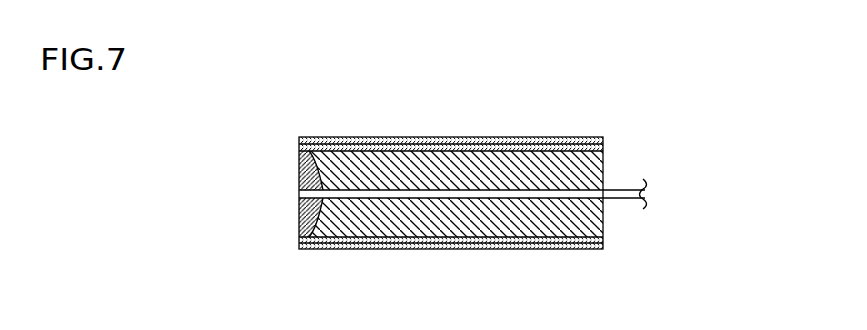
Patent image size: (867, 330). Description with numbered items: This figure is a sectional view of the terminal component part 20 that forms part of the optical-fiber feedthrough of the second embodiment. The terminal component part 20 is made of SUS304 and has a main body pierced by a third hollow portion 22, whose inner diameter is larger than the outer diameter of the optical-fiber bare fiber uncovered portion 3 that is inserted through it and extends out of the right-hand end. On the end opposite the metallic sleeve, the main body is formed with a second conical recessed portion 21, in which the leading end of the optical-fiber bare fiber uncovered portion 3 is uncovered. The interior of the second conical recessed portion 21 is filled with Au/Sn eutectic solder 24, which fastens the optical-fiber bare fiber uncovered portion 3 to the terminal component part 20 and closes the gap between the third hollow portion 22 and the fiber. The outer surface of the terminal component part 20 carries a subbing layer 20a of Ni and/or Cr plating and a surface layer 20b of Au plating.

The optical-fiber bare fiber uncovered portion 3 is at (632, 188).
The terminal component part 20 is at (499, 137).
The subbing layer 20a is at (563, 249).
The surface layer 20b is at (555, 137).
The second conical recessed portion 21 is at (306, 150).
The third hollow portion 22 is at (394, 182).
The solder 24 is at (298, 213).